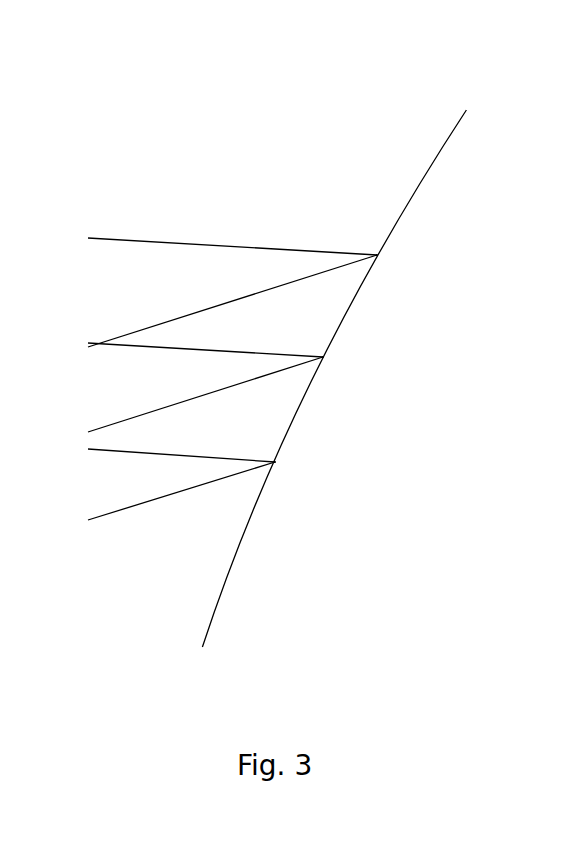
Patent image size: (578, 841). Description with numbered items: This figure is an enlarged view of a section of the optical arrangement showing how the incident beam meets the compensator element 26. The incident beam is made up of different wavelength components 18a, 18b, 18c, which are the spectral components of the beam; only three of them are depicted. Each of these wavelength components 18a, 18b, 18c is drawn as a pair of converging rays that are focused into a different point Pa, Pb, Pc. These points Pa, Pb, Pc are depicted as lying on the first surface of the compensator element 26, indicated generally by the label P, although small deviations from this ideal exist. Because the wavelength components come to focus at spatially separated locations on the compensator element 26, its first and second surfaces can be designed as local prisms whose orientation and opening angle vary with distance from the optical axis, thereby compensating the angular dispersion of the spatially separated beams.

The compensator element 26 is at (441, 146).
The point region P is at (360, 185).
The focus point Pa is at (387, 258).
The focus point Pb is at (335, 357).
The focus point Pc is at (287, 465).
The wavelength component 18a is at (177, 240).
The wavelength component 18b is at (229, 350).
The wavelength component 18c is at (177, 492).